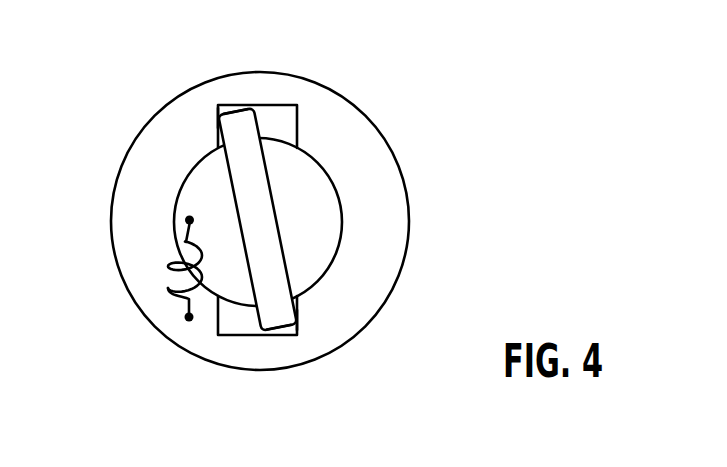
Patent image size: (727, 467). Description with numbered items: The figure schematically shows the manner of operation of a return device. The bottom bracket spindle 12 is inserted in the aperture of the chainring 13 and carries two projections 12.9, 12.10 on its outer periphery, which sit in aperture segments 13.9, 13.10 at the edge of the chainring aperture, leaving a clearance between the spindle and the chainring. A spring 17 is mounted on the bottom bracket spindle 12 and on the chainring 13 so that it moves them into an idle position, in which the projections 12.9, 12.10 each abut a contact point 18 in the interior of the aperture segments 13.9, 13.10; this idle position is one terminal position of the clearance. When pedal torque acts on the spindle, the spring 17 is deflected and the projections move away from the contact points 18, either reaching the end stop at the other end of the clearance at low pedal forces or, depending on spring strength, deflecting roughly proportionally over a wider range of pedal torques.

The bottom bracket spindle 12 is at (313, 180).
The projection 12.9 is at (232, 113).
The projection 12.10 is at (283, 322).
The chainring 13 is at (383, 230).
The aperture segment 13.9 is at (277, 115).
The aperture segment 13.10 is at (240, 323).
The spring 17 is at (172, 269).
The contact point 18 is at (218, 118).